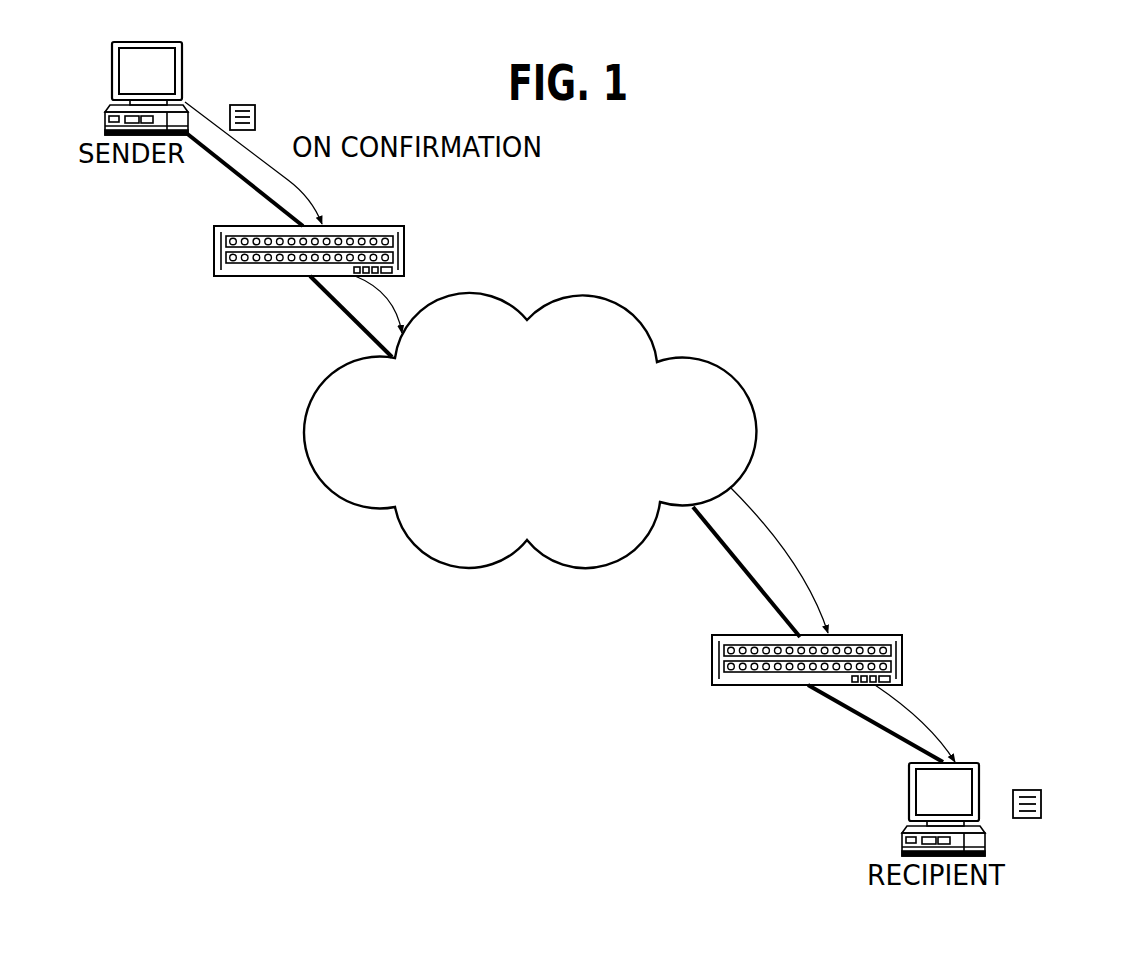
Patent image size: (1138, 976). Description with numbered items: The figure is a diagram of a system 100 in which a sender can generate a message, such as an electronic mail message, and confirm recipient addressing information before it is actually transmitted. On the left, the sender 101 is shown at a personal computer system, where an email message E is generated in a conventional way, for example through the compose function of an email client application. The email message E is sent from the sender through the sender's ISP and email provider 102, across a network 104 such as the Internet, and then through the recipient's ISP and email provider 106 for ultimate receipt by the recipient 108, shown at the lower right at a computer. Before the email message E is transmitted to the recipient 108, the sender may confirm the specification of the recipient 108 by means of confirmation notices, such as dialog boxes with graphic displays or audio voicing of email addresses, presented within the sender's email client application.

The system 100 is at (758, 212).
The sender computer 101 is at (183, 70).
The sender's ISP and email provider 102 is at (405, 232).
The network 104 is at (640, 323).
The recipient's ISP and email provider 106 is at (903, 650).
The recipient 108 is at (980, 772).
The email message E is at (1042, 805).